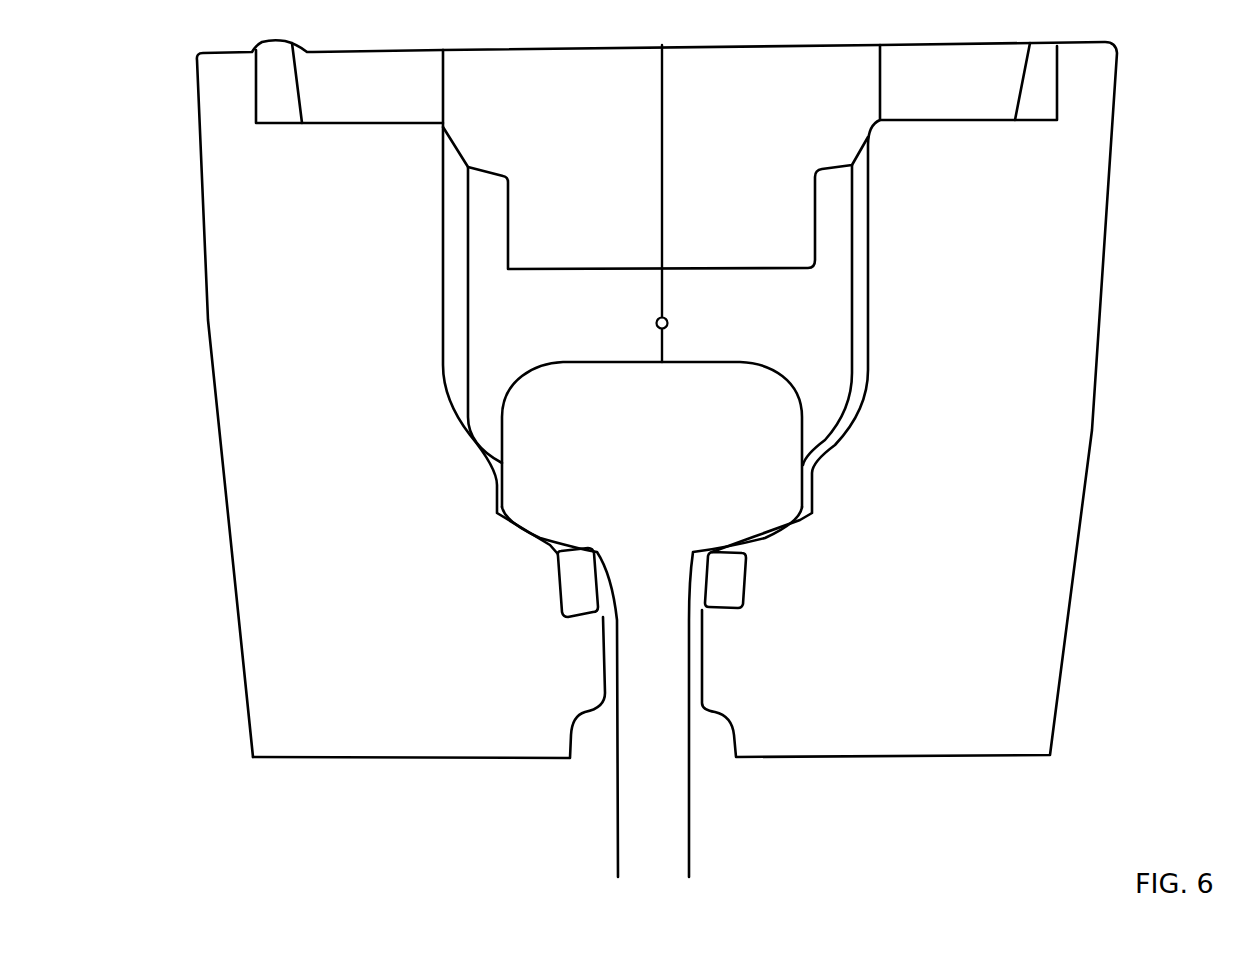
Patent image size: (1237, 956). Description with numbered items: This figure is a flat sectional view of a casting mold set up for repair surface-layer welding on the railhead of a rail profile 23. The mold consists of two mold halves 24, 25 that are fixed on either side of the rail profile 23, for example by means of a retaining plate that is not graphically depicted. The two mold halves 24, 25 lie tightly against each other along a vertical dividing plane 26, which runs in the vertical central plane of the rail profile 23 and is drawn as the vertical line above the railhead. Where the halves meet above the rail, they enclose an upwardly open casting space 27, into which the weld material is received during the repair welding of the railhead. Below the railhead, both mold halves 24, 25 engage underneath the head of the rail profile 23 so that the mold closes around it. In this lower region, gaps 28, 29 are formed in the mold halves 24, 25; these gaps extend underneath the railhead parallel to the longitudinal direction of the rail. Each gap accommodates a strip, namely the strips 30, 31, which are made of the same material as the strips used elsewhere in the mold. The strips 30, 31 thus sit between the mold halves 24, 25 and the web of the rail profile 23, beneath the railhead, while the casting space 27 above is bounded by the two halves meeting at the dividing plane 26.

The rail profile 23 is at (670, 828).
The mold half 24 is at (358, 456).
The mold half 25 is at (993, 491).
The dividing plane 26 is at (662, 150).
The casting space 27 is at (787, 334).
The gap 28 is at (560, 600).
The gap 29 is at (755, 594).
The strip 30 is at (573, 582).
The strip 31 is at (733, 580).